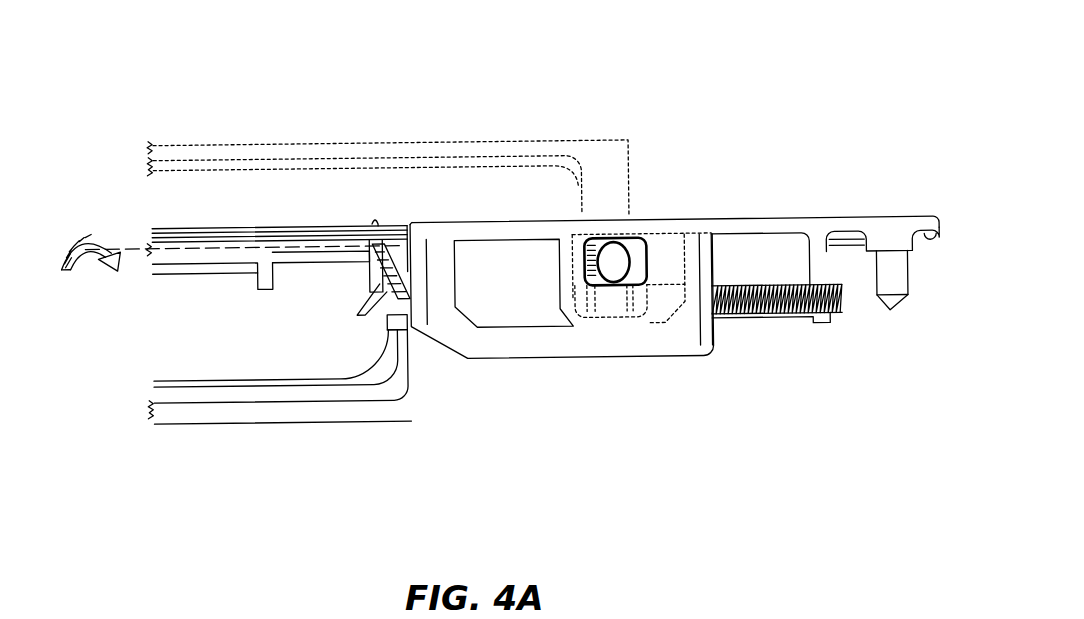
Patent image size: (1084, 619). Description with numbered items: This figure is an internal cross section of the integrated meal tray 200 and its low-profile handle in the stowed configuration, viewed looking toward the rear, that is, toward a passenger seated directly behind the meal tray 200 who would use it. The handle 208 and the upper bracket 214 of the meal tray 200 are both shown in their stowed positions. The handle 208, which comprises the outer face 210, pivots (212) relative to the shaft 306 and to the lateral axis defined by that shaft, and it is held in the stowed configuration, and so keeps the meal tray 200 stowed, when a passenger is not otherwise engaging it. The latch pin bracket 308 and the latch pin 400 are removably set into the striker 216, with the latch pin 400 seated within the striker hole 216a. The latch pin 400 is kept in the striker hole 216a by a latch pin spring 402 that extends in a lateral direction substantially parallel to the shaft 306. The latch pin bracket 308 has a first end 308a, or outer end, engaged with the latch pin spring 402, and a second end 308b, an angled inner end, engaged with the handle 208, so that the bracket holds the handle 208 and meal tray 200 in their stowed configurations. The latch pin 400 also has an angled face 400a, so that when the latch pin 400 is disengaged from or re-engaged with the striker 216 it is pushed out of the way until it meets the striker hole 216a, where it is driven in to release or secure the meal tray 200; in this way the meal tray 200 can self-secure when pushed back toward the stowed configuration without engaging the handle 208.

The meal tray 200 is at (131, 65).
The shaft 306 is at (197, 253).
The handle 208 is at (264, 320).
The striker 216 is at (599, 183).
The striker hole 216a is at (582, 239).
The latch pin 400 is at (653, 276).
The angled face 400a is at (617, 259).
The upper bracket 214 is at (749, 255).
The pivot 212 is at (93, 225).
The outer face 210 is at (209, 346).
The latch pin bracket 308 is at (538, 355).
The first end 308a is at (694, 349).
The second end 308b is at (392, 298).
The latch pin spring 402 is at (747, 312).